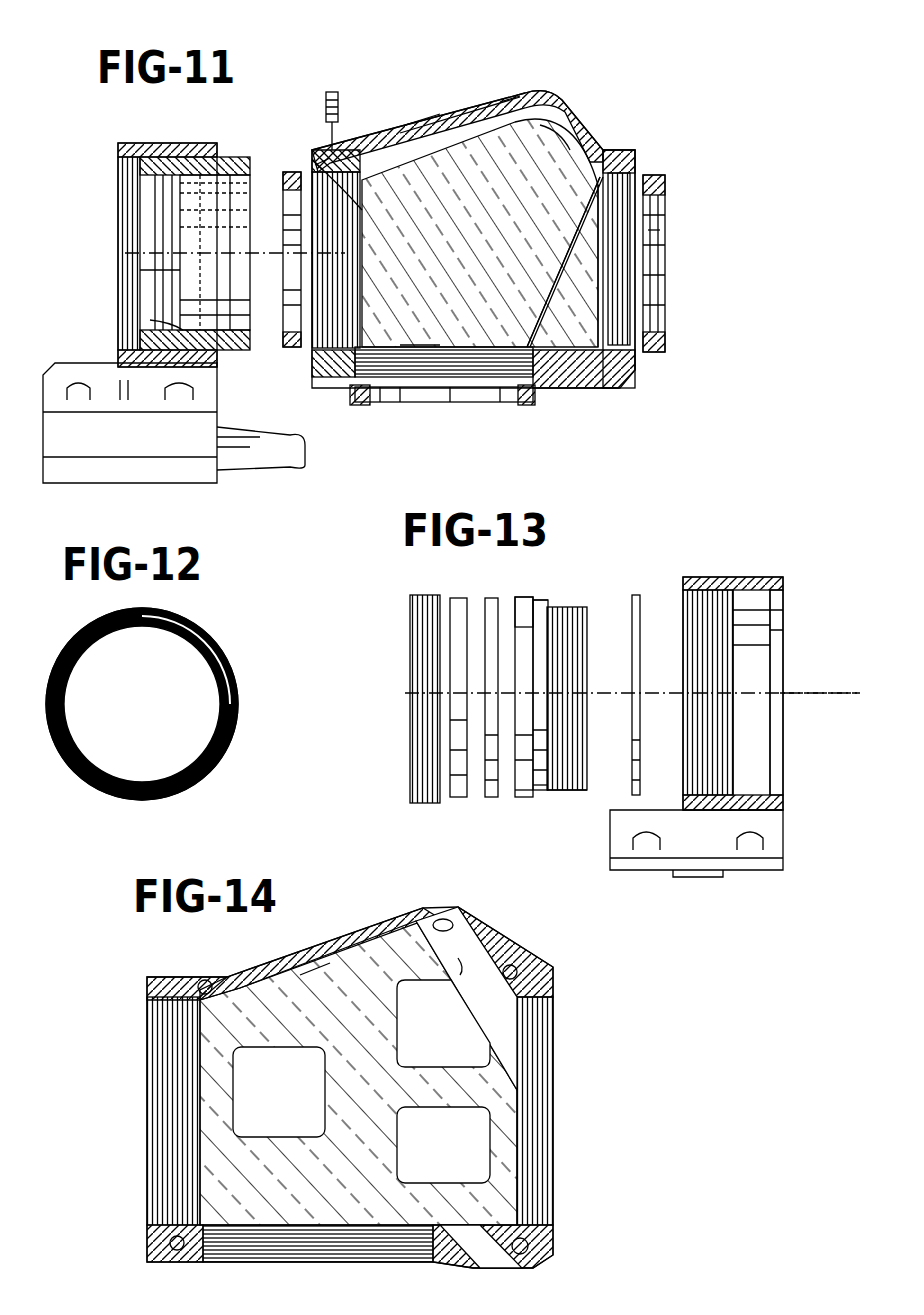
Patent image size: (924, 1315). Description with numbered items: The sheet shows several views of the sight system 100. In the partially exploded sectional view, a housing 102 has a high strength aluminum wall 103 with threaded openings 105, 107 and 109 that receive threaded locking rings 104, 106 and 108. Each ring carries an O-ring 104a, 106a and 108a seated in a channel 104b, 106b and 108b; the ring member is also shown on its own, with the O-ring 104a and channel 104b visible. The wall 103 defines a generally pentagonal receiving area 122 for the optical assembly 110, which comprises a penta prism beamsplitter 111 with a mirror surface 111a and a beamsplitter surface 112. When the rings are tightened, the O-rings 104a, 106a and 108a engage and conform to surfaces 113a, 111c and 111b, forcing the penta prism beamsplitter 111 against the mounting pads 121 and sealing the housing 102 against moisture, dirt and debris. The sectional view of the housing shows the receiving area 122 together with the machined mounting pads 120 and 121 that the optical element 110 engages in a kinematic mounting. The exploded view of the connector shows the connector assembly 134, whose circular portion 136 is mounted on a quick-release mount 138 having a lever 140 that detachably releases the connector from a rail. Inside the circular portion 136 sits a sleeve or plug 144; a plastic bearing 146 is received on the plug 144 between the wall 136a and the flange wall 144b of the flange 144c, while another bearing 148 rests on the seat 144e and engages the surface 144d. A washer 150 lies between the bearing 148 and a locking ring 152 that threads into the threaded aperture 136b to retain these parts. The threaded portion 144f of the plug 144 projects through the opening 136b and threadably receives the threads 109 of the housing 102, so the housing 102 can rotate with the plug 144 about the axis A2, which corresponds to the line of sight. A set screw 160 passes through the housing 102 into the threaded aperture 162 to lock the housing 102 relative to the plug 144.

In FIG. 11, the sight system 100 is at (603, 110).
In FIG. 11, the housing 102 is at (603, 130).
In FIG. 14, the housing 102 is at (313, 937).
In FIG. 11, the housing wall 103 is at (467, 113).
In FIG. 14, the housing wall 103 is at (540, 1070).
In FIG. 11, the locking ring 104 is at (667, 200).
In FIG. 12, the locking ring 104 is at (203, 628).
In FIG. 11, the O-ring 104a is at (657, 337).
In FIG. 12, the O-ring 104a is at (227, 665).
In FIG. 11, the channel 104b is at (660, 350).
In FIG. 12, the channel 104b is at (238, 713).
In FIG. 11, the threaded opening 105 is at (632, 233).
In FIG. 11, the locking ring 106 is at (530, 405).
In FIG. 11, the O-ring 106a is at (540, 395).
In FIG. 11, the channel 106b is at (360, 400).
In FIG. 11, the threaded opening 107 is at (493, 383).
In FIG. 14, the threaded opening 107 is at (363, 1240).
In FIG. 11, the locking ring 108 is at (285, 170).
In FIG. 11, the O-ring 108a is at (295, 350).
In FIG. 11, the channel 108b is at (287, 333).
In FIG. 11, the threaded opening 109 is at (350, 155).
In FIG. 14, the threaded opening 109 is at (150, 1117).
In FIG. 11, the optical assembly 110 is at (530, 97).
In FIG. 14, the optical assembly 110 is at (203, 1073).
In FIG. 11, the penta prism beamsplitter 111 is at (547, 143).
In FIG. 11, the mirror surface 111a is at (508, 97).
In FIG. 11, the surface 111b is at (316, 170).
In FIG. 11, the surface 111c is at (417, 343).
In FIG. 11, the beamsplitter surface 112 is at (618, 155).
In FIG. 11, the surface 113a is at (600, 283).
In FIG. 14, the mounting pads 120 is at (305, 1105).
In FIG. 14, the mounting pads 121 is at (253, 993).
In FIG. 11, the receiving area 122 is at (423, 130).
In FIG. 14, the receiving area 122 is at (328, 990).
In FIG. 11, the connector assembly 134 is at (167, 130).
In FIG. 13, the connector assembly 134 is at (730, 575).
In FIG. 13, the circular portion 136 is at (743, 580).
In FIG. 13, the wall 136a is at (757, 590).
In FIG. 13, the threaded aperture 136b is at (727, 660).
In FIG. 11, the quick-release mount 138 is at (147, 477).
In FIG. 13, the quick-release mount 138 is at (773, 830).
In FIG. 11, the lever 140 is at (290, 465).
In FIG. 11, the plug 144 is at (183, 327).
In FIG. 13, the plug 144 is at (523, 800).
In FIG. 13, the flange wall 144b is at (537, 600).
In FIG. 13, the flange 144c is at (540, 787).
In FIG. 13, the surface 144d is at (517, 790).
In FIG. 13, the seat 144e is at (508, 623).
In FIG. 13, the threaded portion 144f is at (590, 784).
In FIG. 11, the plastic bearing 146 is at (199, 155).
In FIG. 13, the plastic bearing 146 is at (643, 597).
In FIG. 11, the bearing 148 is at (180, 195).
In FIG. 13, the bearing 148 is at (485, 623).
In FIG. 11, the washer 150 is at (167, 233).
In FIG. 13, the washer 150 is at (450, 600).
In FIG. 11, the locking ring 152 is at (147, 280).
In FIG. 13, the locking ring 152 is at (413, 647).
In FIG. 11, the set screw 160 is at (327, 103).
In FIG. 11, the threaded aperture 162 is at (235, 172).
In FIG. 13, the axis A2 is at (793, 693).